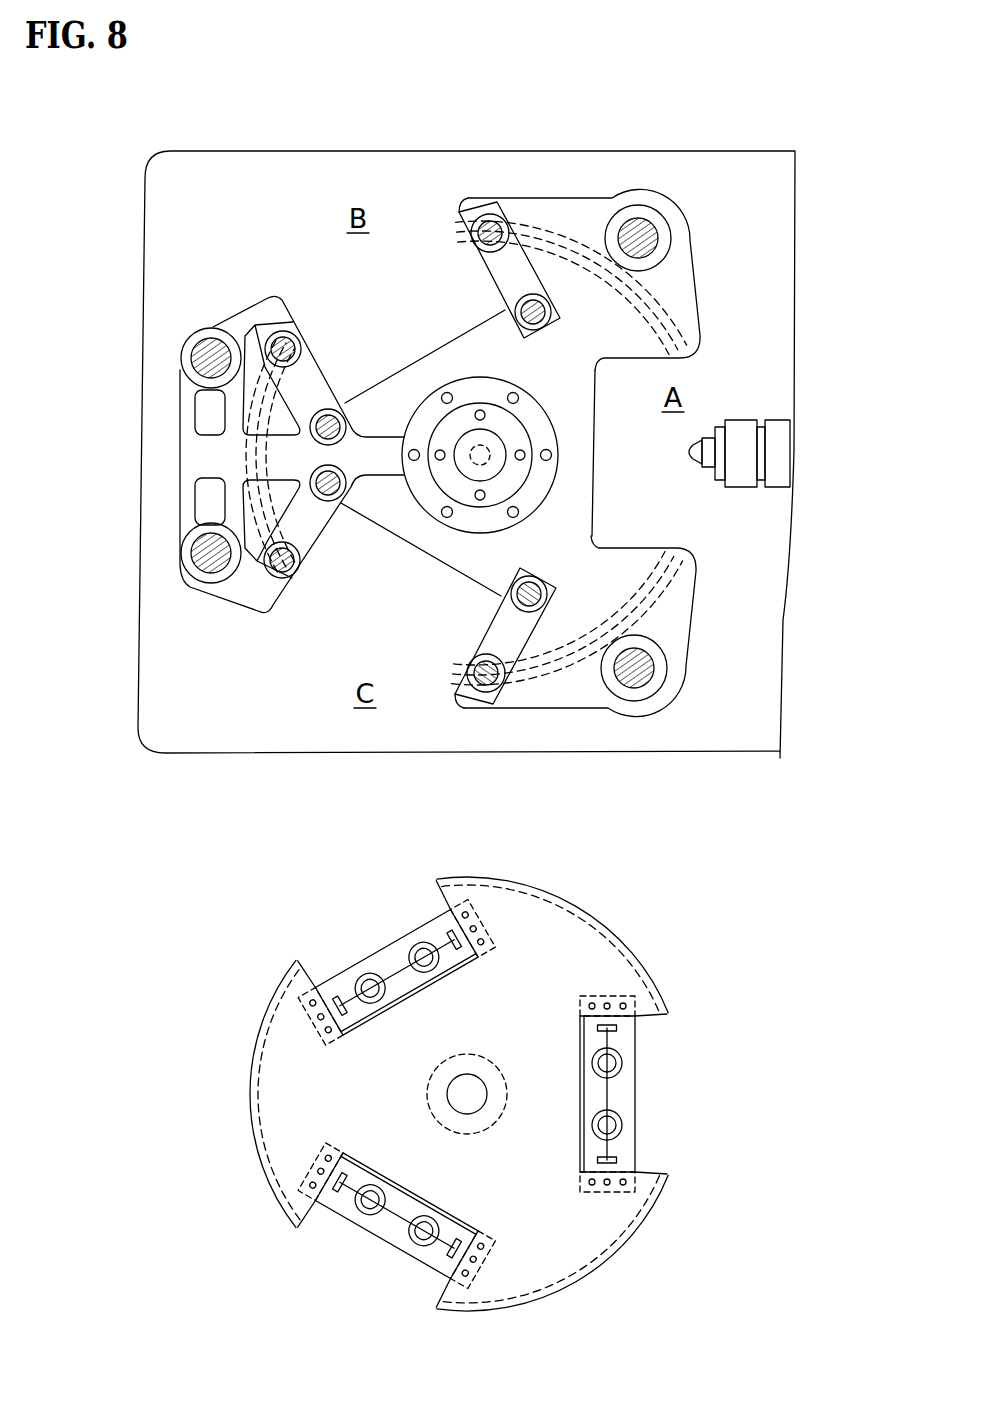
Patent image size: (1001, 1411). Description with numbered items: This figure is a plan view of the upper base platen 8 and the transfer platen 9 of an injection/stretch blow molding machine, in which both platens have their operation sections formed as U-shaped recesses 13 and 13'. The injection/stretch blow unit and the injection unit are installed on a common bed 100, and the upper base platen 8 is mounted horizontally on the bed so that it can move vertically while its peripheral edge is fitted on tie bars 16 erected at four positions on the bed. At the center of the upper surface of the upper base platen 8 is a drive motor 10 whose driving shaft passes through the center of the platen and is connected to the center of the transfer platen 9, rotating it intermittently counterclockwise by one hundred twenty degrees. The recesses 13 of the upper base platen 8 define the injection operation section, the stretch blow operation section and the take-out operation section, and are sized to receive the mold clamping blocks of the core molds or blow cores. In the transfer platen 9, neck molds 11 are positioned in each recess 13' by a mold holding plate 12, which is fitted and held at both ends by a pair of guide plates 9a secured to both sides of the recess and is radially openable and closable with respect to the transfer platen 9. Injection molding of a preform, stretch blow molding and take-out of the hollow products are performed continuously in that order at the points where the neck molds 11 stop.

The common bed 100 is at (300, 182).
The upper base platen 8 is at (580, 292).
The drive motor 10 is at (457, 487).
The U-shaped recess 13 is at (464, 507).
The tie bar 16 is at (645, 236).
The transfer platen 9 is at (563, 963).
The guide plate 9a is at (660, 1003).
The neck mold 11 is at (623, 1122).
The mold holding plate 12 is at (630, 1148).
The U-shaped recess 13' is at (501, 1095).